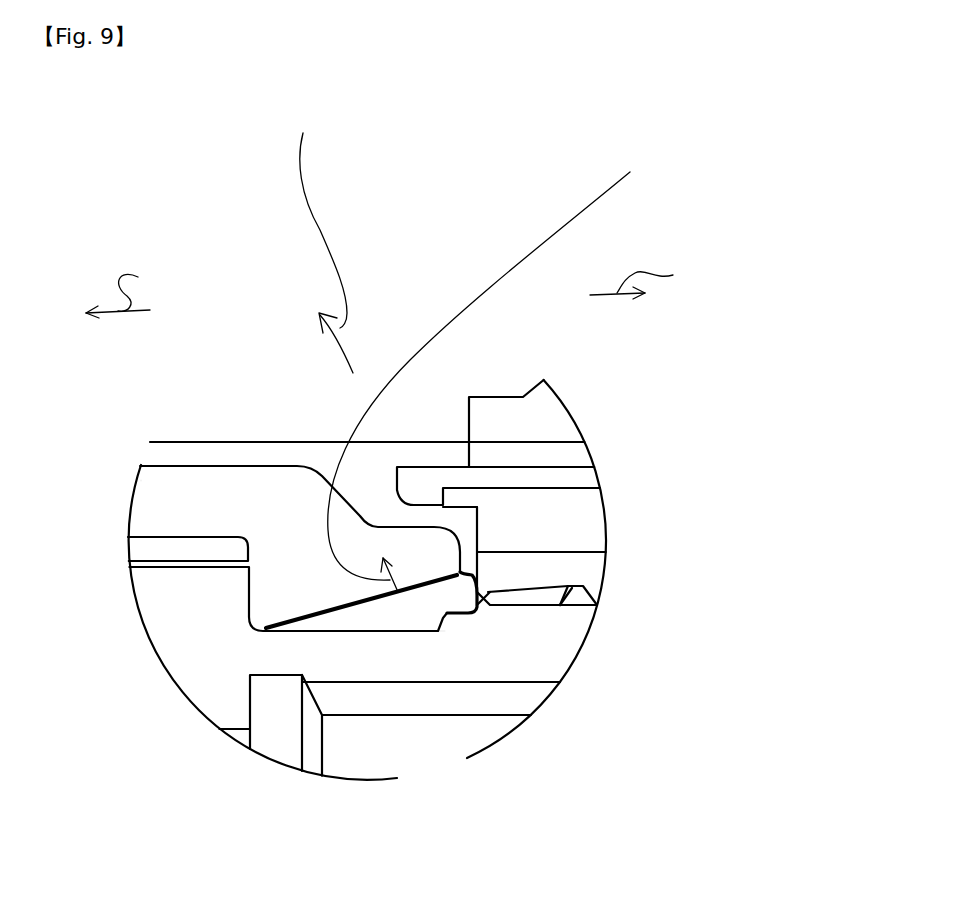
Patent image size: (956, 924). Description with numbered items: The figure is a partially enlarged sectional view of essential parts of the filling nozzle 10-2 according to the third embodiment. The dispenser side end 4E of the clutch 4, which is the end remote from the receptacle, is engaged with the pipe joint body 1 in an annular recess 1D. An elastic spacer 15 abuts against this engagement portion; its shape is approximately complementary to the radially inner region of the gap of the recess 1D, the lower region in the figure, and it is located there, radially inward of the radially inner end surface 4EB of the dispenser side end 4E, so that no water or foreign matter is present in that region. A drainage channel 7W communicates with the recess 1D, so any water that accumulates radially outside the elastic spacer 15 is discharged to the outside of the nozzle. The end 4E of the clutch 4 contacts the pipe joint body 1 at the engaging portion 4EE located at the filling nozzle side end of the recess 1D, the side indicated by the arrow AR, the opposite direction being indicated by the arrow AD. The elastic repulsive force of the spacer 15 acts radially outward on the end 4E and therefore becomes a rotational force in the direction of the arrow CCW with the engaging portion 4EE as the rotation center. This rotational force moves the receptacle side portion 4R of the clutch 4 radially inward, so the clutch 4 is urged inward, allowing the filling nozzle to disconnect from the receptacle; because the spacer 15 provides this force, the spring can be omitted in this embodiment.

The pipe joint body 1 is at (568, 632).
The recess 1D is at (294, 628).
The clutch 4 is at (218, 463).
The receptacle side portion of the clutch 4R is at (163, 494).
The dispenser side end of the clutch 4E is at (430, 556).
The engaging portion 4EE is at (262, 630).
The radially inner end surface 4EB is at (405, 618).
The drainage channel 7W is at (566, 494).
The filling nozzle 10-2 is at (417, 270).
The elastic spacer 15 is at (407, 582).
The arrow CCW is at (318, 240).
The arrow AR is at (126, 288).
The arrow AD is at (647, 278).